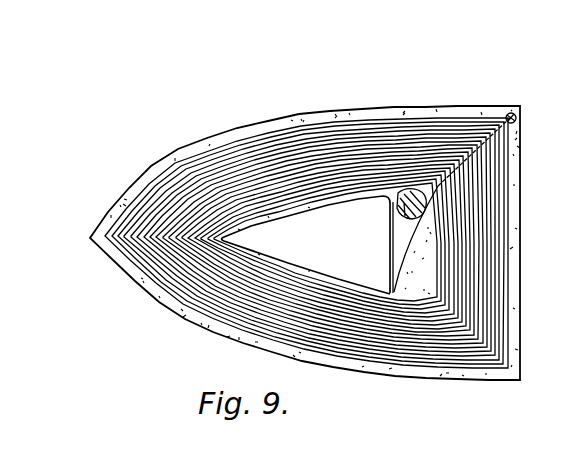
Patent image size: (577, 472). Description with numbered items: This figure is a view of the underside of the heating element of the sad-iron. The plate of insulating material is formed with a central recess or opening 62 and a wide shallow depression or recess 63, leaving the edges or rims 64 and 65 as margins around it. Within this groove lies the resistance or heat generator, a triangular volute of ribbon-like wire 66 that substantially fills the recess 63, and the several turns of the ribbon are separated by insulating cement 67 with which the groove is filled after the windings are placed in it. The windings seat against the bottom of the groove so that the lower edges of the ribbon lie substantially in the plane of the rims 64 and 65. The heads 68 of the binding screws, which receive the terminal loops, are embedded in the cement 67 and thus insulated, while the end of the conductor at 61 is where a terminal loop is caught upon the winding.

The wire lead end 61 is at (383, 284).
The central recess or opening 62 is at (508, 111).
The depression or wide shallow recess 63 is at (538, 235).
The edge or rim 64 is at (233, 124).
The edge or rim 65 is at (307, 196).
The ribbon-like wire 66 is at (230, 290).
The insulating cement 67 is at (388, 110).
The screw head 68 is at (388, 202).